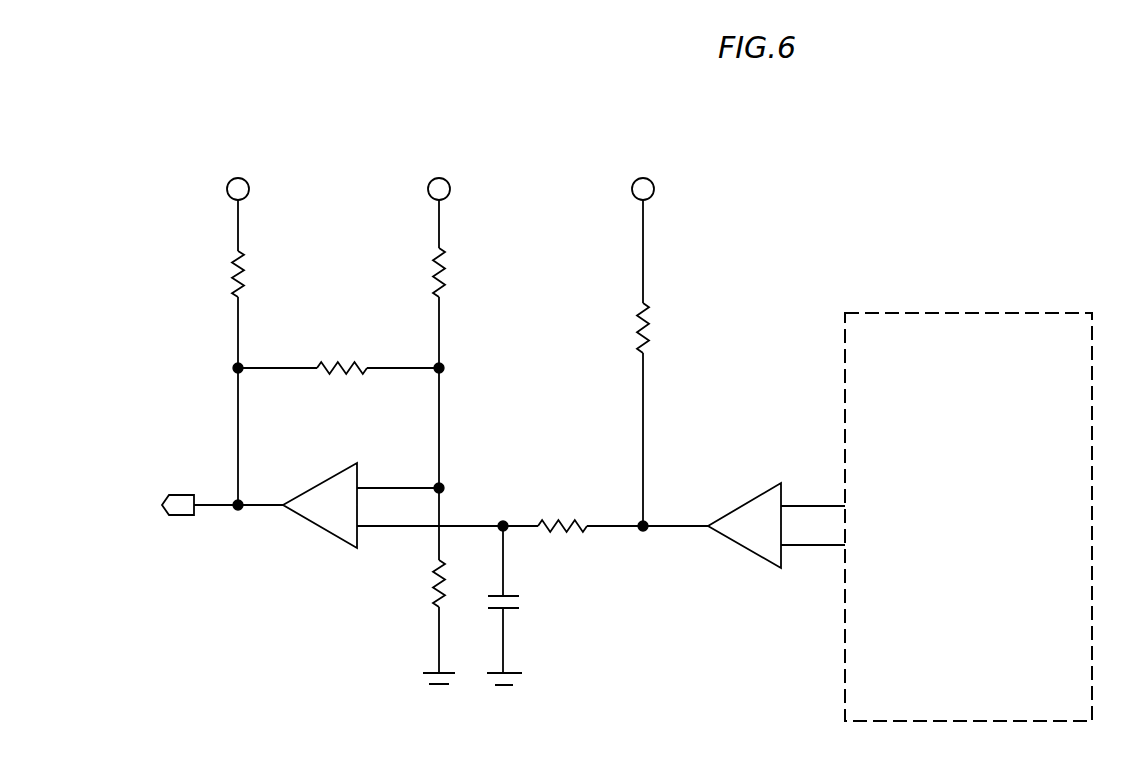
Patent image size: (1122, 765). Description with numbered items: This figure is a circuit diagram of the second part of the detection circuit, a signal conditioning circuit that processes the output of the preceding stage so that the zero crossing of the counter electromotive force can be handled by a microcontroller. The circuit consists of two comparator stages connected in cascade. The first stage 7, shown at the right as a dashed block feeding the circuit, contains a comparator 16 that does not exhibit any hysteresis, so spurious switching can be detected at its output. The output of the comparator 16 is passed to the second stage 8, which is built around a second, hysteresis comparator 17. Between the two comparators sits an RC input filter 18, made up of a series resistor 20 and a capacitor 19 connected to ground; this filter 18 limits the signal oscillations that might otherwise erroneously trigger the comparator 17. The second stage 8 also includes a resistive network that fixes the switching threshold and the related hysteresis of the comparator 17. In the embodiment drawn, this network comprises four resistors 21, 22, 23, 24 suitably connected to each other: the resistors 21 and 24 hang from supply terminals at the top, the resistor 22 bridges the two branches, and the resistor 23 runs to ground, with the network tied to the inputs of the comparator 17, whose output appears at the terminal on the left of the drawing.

The first stage 7 is at (765, 331).
The second stage 8 is at (312, 256).
The comparator 16 is at (748, 554).
The hysteresis comparator 17 is at (311, 528).
The RC input filter 18 is at (579, 585).
The capacitor 19 is at (524, 604).
The resistor 20 is at (562, 513).
The resistor 21 is at (231, 273).
The resistor 22 is at (352, 361).
The resistor 23 is at (432, 602).
The resistor 24 is at (454, 270).